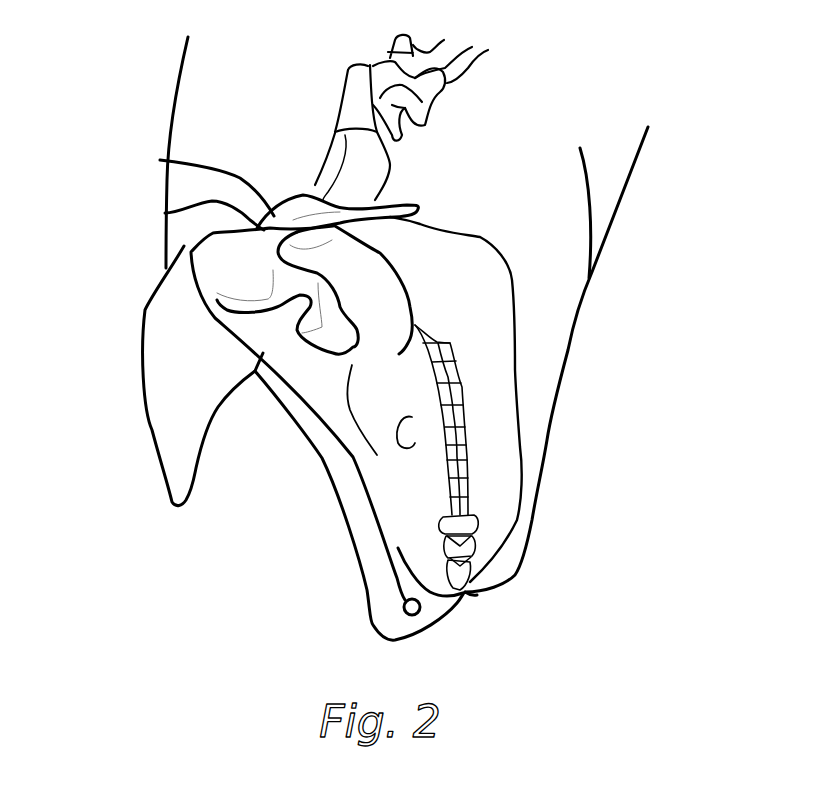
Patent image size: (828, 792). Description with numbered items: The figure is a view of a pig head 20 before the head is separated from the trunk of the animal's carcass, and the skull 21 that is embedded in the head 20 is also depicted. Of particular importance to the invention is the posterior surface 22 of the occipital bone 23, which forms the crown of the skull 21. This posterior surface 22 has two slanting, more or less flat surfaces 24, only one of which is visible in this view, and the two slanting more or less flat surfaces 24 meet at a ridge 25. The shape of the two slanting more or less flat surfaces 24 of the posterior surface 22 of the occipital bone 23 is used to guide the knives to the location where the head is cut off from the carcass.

The head 20 is at (293, 475).
The skull 21 is at (493, 383).
The posterior surface 22 is at (283, 187).
The occipital bone 23 is at (228, 267).
The slanting more or less flat surfaces 24 is at (165, 213).
The ridge 25 is at (160, 160).